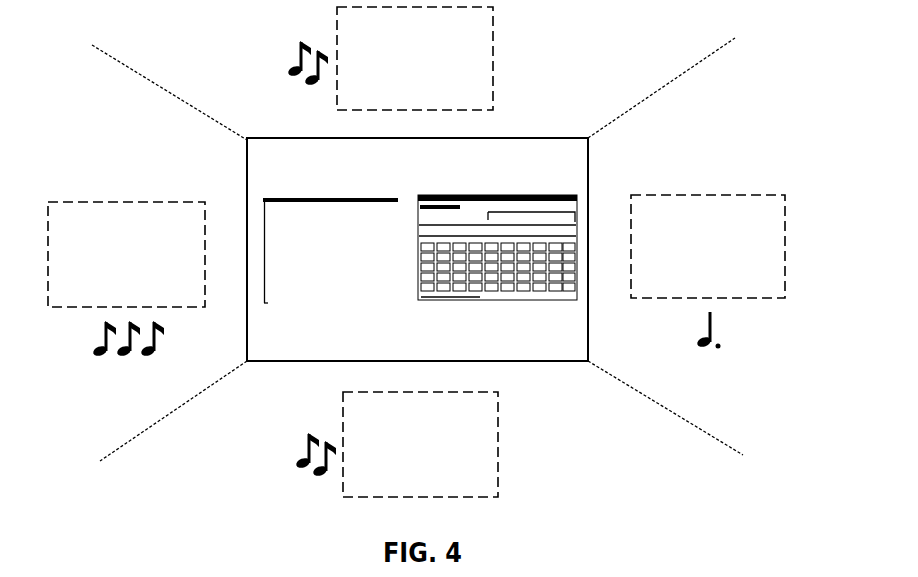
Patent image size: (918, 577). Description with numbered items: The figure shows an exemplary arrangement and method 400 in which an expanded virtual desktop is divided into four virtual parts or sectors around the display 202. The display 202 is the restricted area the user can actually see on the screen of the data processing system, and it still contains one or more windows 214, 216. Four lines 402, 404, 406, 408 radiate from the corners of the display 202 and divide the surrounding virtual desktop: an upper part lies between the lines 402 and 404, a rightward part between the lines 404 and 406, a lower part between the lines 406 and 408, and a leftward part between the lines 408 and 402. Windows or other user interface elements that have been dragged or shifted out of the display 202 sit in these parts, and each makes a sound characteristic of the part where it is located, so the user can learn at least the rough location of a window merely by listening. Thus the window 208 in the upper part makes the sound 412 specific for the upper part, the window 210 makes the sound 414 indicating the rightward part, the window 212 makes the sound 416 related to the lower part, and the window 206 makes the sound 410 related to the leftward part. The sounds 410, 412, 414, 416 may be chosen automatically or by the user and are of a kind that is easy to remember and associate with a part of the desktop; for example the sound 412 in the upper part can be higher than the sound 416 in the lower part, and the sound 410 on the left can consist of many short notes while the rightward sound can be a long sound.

The arrangement and method 400 is at (625, 62).
The display 202 is at (522, 137).
The window 206 is at (73, 202).
The window 208 is at (493, 47).
The window 210 is at (783, 195).
The window 212 is at (498, 453).
The window 214 is at (338, 198).
The window 216 is at (495, 196).
The line 402 is at (173, 97).
The line 404 is at (665, 83).
The line 406 is at (695, 425).
The line 408 is at (148, 430).
The sound 410 is at (105, 357).
The sound 412 is at (293, 43).
The sound 414 is at (710, 347).
The sound 416 is at (298, 458).